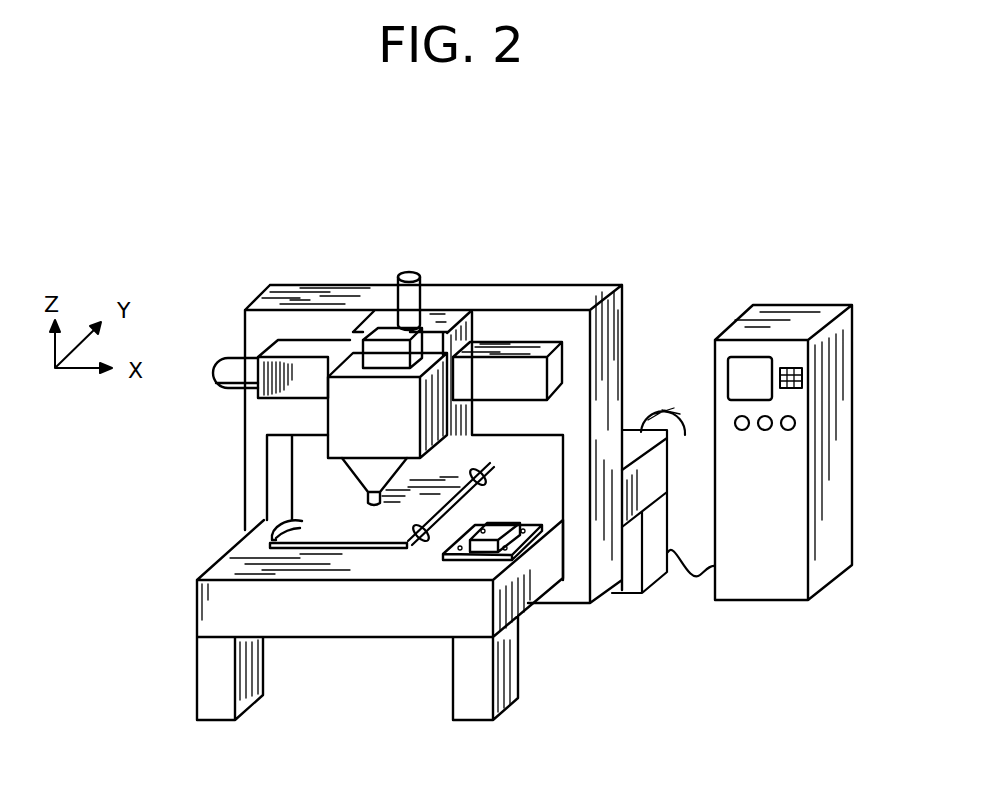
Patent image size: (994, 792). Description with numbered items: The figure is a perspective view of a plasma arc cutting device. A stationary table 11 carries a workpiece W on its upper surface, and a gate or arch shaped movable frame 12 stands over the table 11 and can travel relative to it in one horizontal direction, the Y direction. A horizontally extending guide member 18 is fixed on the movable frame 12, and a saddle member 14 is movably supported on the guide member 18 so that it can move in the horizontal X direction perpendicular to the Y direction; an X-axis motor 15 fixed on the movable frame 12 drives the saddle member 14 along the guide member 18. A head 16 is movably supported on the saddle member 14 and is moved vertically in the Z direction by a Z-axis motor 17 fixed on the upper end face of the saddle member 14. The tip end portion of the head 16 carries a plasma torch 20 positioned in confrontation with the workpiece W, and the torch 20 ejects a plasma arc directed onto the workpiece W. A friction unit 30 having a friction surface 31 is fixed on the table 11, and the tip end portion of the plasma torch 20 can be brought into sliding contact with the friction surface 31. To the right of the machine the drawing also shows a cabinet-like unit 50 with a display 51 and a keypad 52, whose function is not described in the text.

The stationary table 11 is at (210, 611).
The movable frame 12 is at (607, 352).
The saddle member 14 is at (416, 316).
The X-axis motor 15 is at (228, 357).
The head 16 is at (345, 415).
The Z-axis motor 17 is at (409, 272).
The guide member 18 is at (507, 315).
The plasma torch 20 is at (366, 497).
The workpiece W is at (323, 524).
The friction unit 30 is at (487, 545).
The friction surface 31 is at (507, 523).
The controller 50 is at (811, 414).
The display 51 is at (742, 367).
The keypad 52 is at (803, 386).